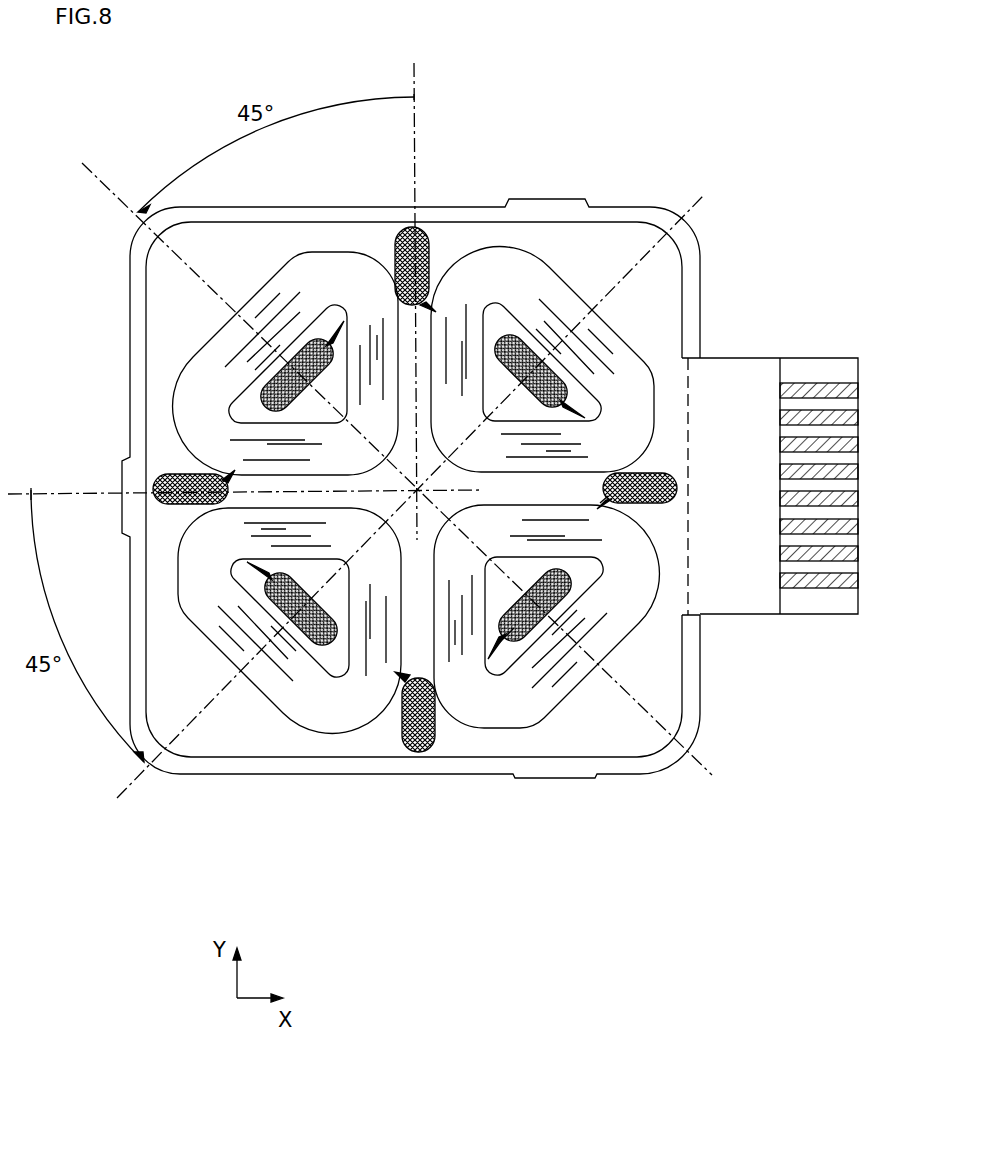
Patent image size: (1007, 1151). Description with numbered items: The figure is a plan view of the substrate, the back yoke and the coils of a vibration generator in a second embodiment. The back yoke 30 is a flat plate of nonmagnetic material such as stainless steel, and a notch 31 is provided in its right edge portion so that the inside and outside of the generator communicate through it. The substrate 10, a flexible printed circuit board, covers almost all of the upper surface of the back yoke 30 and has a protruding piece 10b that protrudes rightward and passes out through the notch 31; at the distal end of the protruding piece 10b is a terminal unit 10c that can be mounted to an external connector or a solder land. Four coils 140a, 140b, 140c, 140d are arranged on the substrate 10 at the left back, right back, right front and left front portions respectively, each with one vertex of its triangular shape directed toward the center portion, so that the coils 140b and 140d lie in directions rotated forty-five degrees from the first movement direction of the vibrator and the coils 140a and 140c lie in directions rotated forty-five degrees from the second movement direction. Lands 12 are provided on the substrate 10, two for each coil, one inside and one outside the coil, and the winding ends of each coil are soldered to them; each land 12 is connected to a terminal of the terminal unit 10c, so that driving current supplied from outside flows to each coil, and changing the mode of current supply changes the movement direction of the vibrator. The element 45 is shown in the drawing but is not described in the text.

The substrate 10 is at (625, 757).
The protruding piece 10b is at (767, 377).
The terminal unit 10c is at (818, 413).
The land 12 is at (430, 248).
The back yoke 30 is at (222, 775).
The notch 31 is at (699, 356).
The lead wires 45 is at (600, 503).
The coil 140a is at (353, 300).
The coil 140b is at (622, 378).
The coil 140c is at (532, 700).
The coil 140d is at (305, 702).